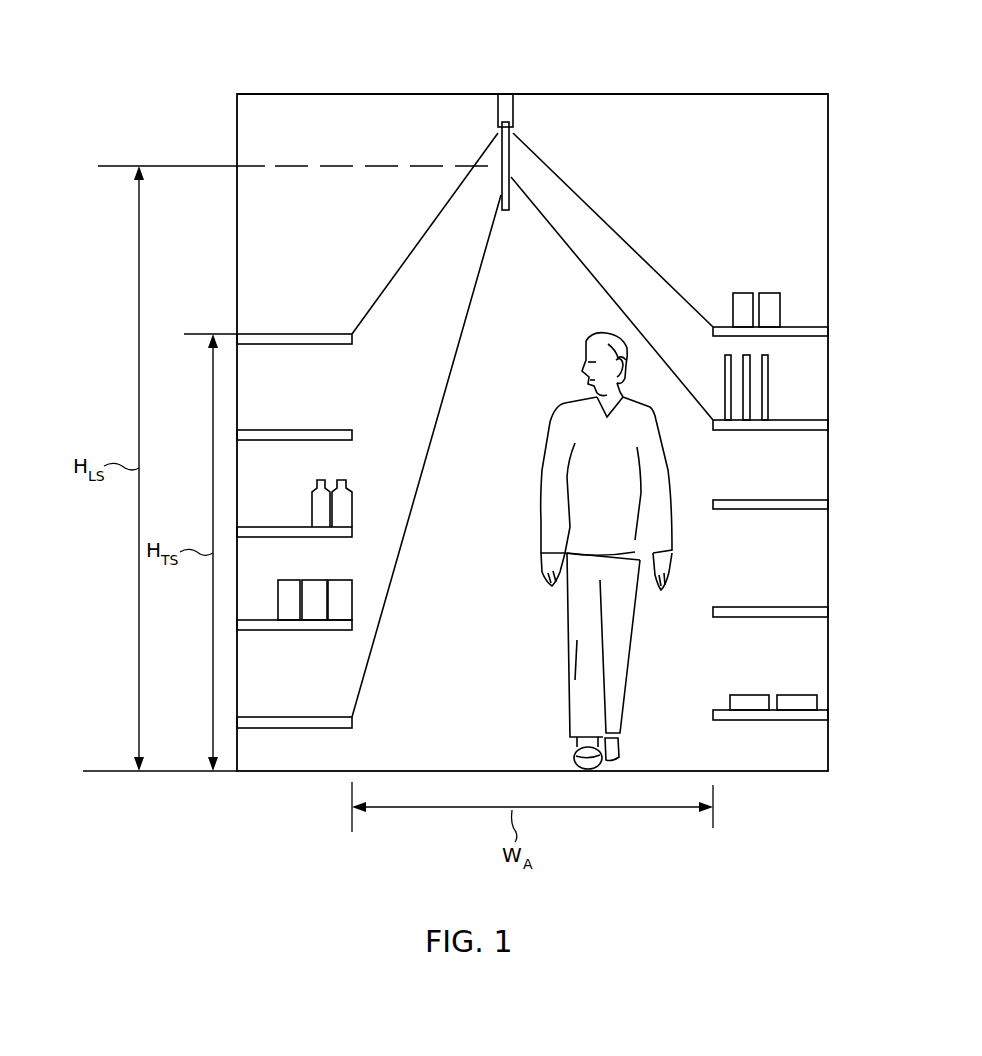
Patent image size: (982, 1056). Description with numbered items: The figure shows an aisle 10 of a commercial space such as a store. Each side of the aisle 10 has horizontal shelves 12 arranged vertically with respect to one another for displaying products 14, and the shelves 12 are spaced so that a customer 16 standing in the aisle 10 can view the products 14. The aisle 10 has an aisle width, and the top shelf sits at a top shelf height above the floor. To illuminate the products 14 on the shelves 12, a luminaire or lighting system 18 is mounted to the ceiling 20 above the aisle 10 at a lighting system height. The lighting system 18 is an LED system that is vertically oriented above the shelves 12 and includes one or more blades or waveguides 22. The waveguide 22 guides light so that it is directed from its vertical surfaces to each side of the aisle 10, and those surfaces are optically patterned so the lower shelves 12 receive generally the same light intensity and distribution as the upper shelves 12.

The aisle 10 is at (615, 58).
The shelves 12 is at (312, 344).
The products 14 is at (340, 507).
The customer 16 is at (569, 676).
The lighting system 18 is at (444, 128).
The ceiling 20 is at (691, 100).
The waveguide 22 is at (510, 158).